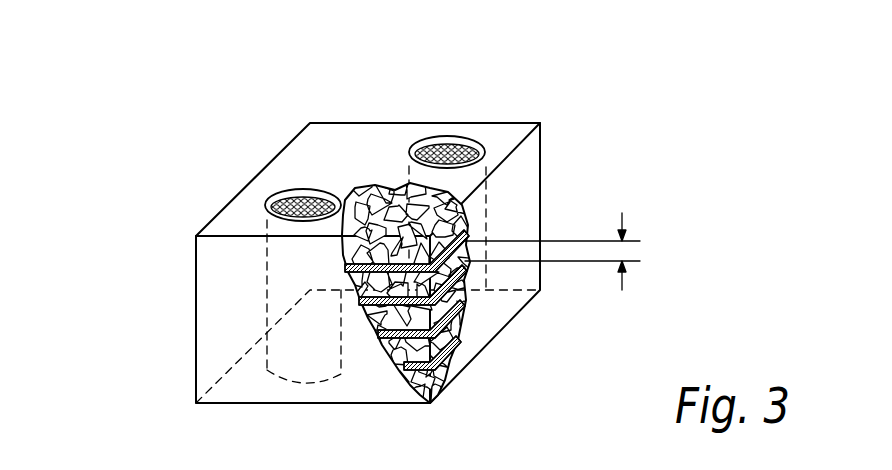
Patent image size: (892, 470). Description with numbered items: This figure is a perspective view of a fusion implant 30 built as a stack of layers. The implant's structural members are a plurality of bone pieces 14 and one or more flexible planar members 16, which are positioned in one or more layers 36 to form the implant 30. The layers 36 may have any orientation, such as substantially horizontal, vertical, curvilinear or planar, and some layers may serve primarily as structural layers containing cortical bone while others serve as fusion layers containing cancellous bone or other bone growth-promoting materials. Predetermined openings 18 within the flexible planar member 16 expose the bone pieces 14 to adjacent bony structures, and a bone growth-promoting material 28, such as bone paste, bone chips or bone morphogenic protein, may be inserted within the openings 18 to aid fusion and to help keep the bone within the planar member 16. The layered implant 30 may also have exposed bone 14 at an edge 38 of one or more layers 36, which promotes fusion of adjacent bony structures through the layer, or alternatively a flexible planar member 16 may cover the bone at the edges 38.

The fusion implant 30 is at (114, 107).
The flexible planar member 16 is at (213, 292).
The predetermined opening 18 is at (283, 193).
The bone growth-promoting material 28 is at (458, 147).
The edge 38 is at (313, 197).
The bone pieces 14 is at (473, 318).
The layers 36 is at (622, 213).